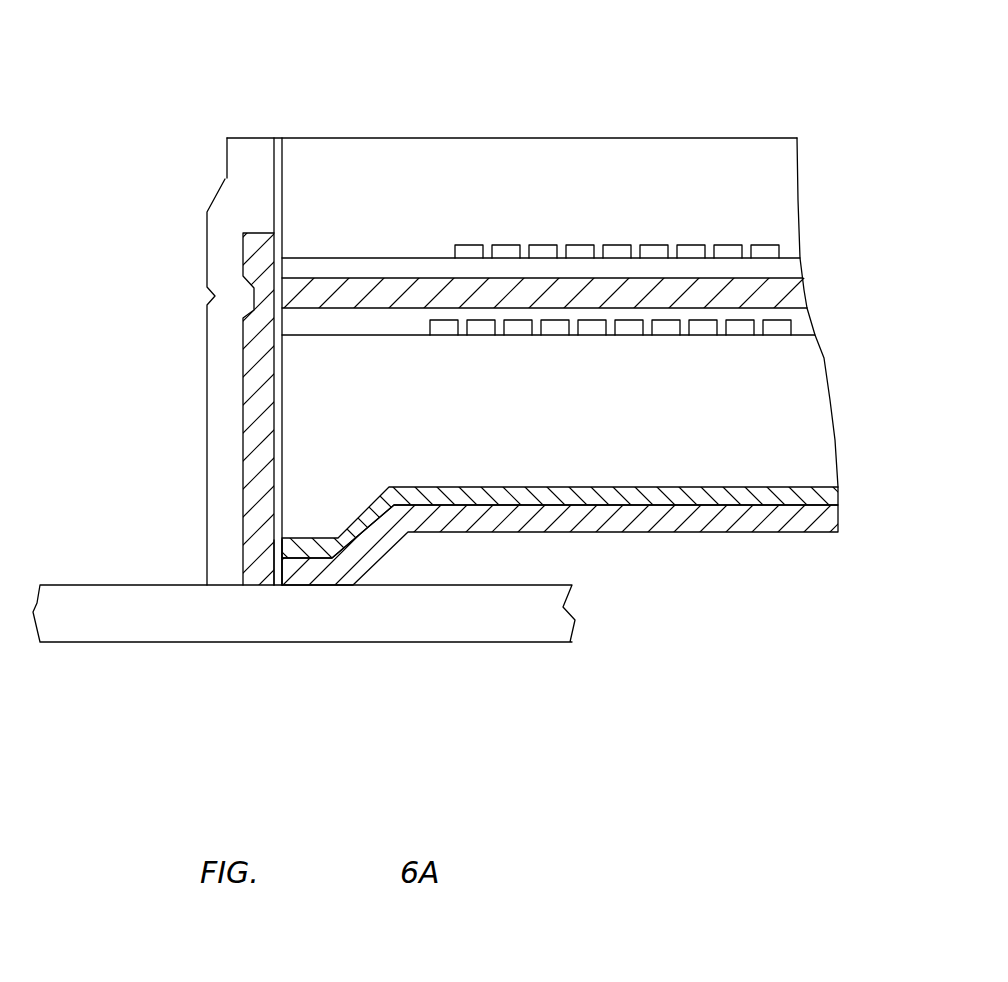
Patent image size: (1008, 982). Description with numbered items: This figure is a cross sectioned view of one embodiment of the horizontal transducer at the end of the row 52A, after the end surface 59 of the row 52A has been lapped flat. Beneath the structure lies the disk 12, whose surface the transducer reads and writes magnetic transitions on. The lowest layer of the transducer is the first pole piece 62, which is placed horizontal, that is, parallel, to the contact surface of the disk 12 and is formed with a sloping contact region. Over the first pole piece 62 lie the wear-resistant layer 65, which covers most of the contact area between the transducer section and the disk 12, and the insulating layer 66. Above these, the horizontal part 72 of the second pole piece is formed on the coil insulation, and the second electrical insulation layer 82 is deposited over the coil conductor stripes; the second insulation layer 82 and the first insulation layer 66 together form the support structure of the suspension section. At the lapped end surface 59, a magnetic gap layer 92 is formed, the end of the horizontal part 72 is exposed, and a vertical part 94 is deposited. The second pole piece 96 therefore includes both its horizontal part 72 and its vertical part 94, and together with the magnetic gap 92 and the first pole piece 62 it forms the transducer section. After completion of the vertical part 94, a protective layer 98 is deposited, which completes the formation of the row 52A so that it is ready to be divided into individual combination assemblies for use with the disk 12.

The row 52A is at (488, 105).
The horizontal part of second pole piece 72 is at (598, 297).
The second electrical insulation layer 82 is at (772, 182).
The end surface 59 is at (282, 178).
The protective layer 98 is at (223, 243).
The second pole piece 96 is at (243, 368).
The vertical part 94 is at (253, 477).
The insulating layer 66 is at (808, 413).
The wear-resistant layer 65 is at (820, 496).
The first pole piece 62 is at (710, 513).
The magnetic gap layer 92 is at (273, 585).
The disk 12 is at (535, 617).